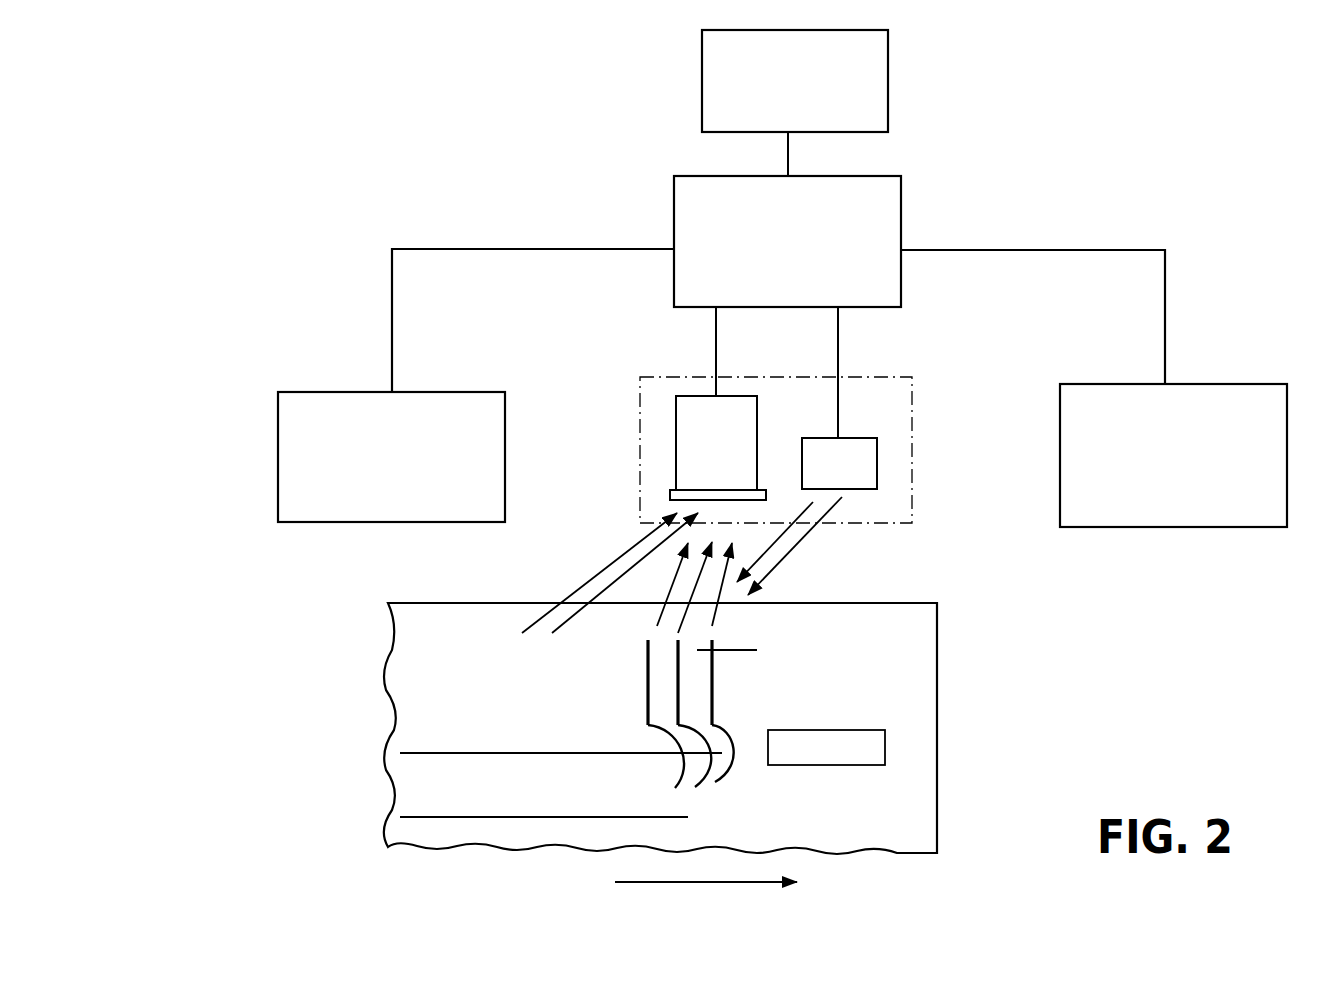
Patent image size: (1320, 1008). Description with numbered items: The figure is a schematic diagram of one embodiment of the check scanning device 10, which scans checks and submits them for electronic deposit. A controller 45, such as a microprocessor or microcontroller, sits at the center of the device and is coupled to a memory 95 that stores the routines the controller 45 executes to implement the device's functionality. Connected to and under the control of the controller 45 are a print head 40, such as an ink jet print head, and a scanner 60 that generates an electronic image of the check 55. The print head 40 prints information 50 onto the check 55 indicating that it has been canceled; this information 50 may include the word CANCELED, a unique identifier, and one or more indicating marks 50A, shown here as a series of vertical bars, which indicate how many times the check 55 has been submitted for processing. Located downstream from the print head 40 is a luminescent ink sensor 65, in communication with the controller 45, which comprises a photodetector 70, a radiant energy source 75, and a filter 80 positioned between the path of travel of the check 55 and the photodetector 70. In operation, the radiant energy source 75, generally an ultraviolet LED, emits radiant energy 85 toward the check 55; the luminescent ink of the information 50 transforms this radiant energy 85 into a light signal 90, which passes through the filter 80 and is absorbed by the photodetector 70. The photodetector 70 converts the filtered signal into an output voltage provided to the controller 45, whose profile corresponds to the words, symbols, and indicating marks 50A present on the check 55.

The check scanning device 10 is at (325, 197).
The memory 95 is at (888, 72).
The controller 45 is at (677, 195).
The scanner 60 is at (348, 395).
The print head 40 is at (1202, 384).
The luminescent ink sensor 65 is at (912, 417).
The photodetector 70 is at (687, 395).
The filter 80 is at (670, 494).
The radiant energy source 75 is at (877, 458).
The light signal 90 is at (598, 567).
The radiant energy 85 is at (790, 557).
The check 55 is at (937, 689).
The information 50 is at (455, 636).
The indicating marks 50A is at (680, 786).